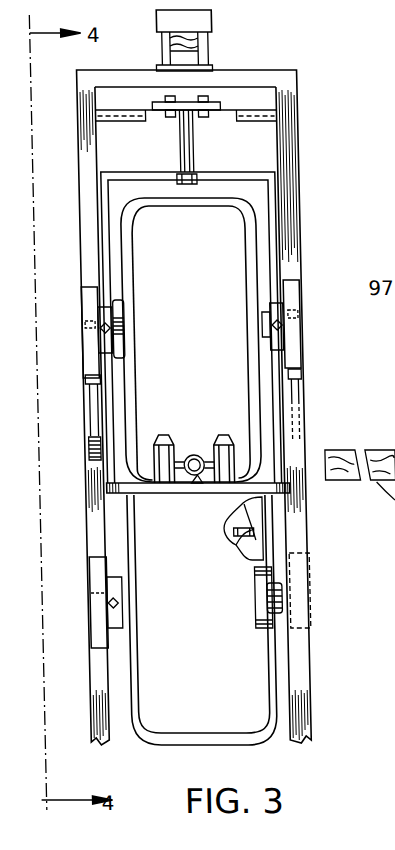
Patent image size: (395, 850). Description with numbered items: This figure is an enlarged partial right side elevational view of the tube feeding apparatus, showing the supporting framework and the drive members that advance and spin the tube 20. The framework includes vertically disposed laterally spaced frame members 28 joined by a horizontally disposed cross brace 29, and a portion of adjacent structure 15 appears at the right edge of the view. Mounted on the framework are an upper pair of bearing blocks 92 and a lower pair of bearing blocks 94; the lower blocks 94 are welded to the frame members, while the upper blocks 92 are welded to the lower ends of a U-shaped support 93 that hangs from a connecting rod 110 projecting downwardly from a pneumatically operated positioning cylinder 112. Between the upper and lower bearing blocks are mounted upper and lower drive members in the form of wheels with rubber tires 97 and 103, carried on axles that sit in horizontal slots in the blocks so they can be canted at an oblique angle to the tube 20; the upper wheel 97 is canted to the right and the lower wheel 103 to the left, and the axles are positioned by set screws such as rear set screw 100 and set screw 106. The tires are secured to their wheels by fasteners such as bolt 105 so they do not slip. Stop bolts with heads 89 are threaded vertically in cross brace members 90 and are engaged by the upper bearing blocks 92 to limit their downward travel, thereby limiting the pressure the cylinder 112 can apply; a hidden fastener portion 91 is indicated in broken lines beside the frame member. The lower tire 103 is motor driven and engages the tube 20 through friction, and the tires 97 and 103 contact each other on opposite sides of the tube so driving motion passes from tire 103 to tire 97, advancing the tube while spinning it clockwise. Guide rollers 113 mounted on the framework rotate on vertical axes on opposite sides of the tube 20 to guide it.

The wall stud 15 is at (359, 445).
The tube 20 is at (182, 455).
The vertically disposed frame members 28 is at (89, 510).
The cross brace 29 is at (279, 67).
The bolt heads 89 is at (76, 380).
The cross brace members 90 is at (84, 438).
The hidden bolt shaft 91 is at (297, 437).
The upper bearing blocks 92 is at (78, 300).
The U-shaped support 93 is at (214, 170).
The lower bearing blocks 94 is at (81, 635).
The upper wheel with rubber tire 97 is at (207, 324).
The rear set screw 100 is at (92, 335).
The lower wheel and tire assembly 103 is at (205, 640).
The bolt 105 is at (243, 533).
The set screw 106 is at (90, 617).
The connecting rod 110 is at (177, 150).
The pneumatically operated positioning cylinder 112 is at (195, 40).
The guide rollers 113 is at (238, 435).